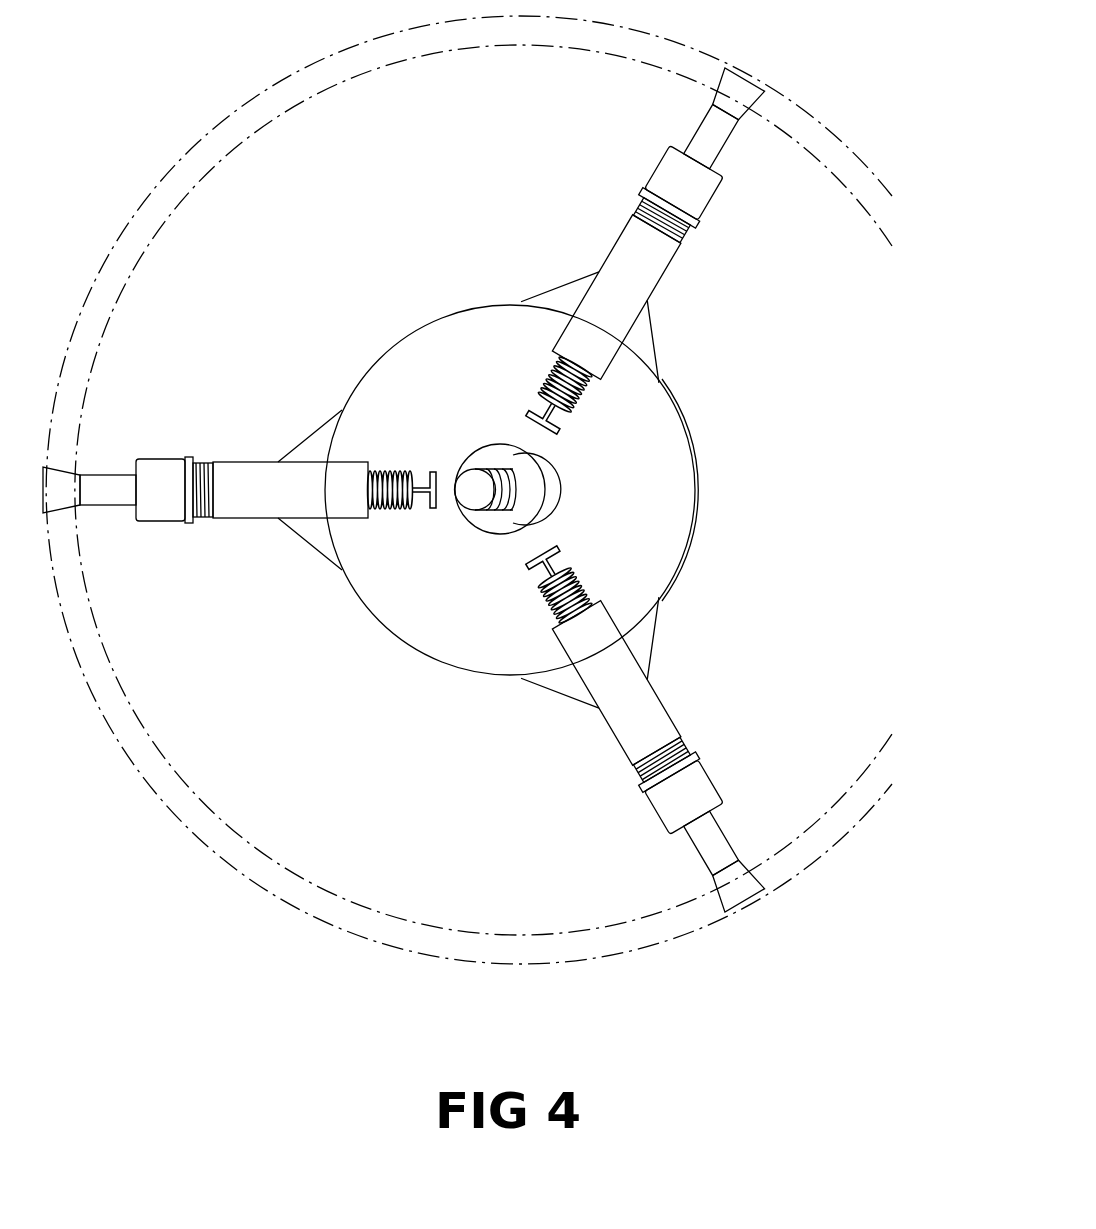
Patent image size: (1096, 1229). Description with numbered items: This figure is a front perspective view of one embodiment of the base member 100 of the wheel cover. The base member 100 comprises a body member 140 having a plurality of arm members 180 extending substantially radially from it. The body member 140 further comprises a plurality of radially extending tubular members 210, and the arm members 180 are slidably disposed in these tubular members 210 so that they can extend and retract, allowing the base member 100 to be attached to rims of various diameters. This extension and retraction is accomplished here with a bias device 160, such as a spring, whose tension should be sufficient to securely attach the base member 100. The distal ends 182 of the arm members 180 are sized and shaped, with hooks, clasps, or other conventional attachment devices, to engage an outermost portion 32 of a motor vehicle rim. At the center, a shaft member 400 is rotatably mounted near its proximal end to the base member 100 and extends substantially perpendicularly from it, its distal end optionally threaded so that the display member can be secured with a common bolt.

The base member 100 is at (205, 62).
The outermost portion 32 is at (148, 212).
The body member 140 is at (437, 340).
The bias device 160 is at (560, 378).
The arm member 180 is at (702, 130).
The distal end 182 is at (748, 80).
The tubular member 210 is at (625, 258).
The shaft member 400 is at (495, 492).